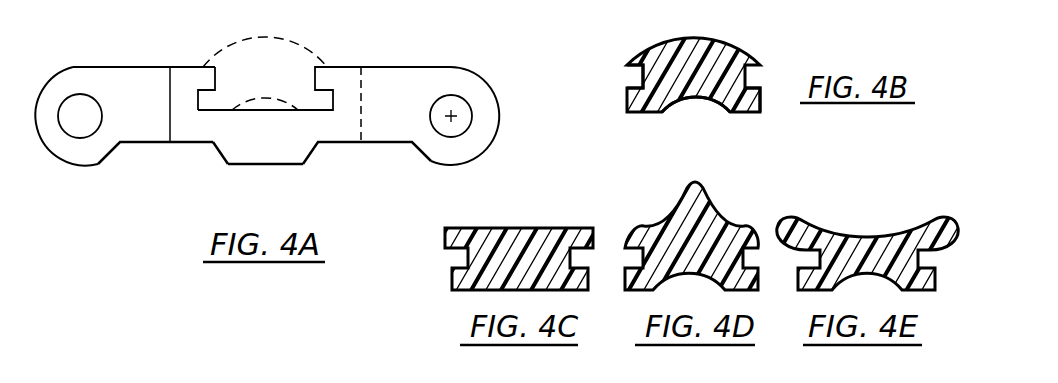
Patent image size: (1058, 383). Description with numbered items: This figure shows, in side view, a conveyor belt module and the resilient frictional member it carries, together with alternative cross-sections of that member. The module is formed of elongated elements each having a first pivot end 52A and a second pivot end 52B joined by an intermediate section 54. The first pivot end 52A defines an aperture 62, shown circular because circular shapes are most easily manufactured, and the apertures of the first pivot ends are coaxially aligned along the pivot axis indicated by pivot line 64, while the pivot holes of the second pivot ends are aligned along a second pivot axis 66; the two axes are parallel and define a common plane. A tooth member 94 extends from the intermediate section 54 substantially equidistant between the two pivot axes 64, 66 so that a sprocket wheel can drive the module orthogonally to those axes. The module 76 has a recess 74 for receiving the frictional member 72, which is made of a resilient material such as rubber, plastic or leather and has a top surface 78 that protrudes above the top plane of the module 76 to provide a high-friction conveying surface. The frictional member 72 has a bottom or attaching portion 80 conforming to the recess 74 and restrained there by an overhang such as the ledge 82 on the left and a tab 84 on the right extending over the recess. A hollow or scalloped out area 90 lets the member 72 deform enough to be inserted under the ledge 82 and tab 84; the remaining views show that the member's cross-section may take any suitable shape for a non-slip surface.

In FIG. 4A, the first pivot end 52A is at (478, 148).
In FIG. 4A, the second pivot end 52B is at (87, 163).
In FIG. 4A, the intermediate section 54 is at (213, 138).
In FIG. 4A, the aperture 62 is at (442, 136).
In FIG. 4A, the pivot line 64 is at (452, 100).
In FIG. 4A, the second pivot axis 66 is at (84, 106).
In FIG. 4B, the frictional member 72 is at (737, 50).
In FIG. 4A, the recess 74 is at (233, 44).
In FIG. 4A, the module 76 is at (320, 140).
In FIG. 4B, the top surface 78 is at (660, 50).
In FIG. 4B, the attaching portion 80 is at (735, 110).
In FIG. 4A, the ledge 82 is at (212, 66).
In FIG. 4A, the tab 84 is at (322, 70).
In FIG. 4B, the scalloped out area 90 is at (695, 101).
In FIG. 4A, the tooth member 94 is at (267, 160).